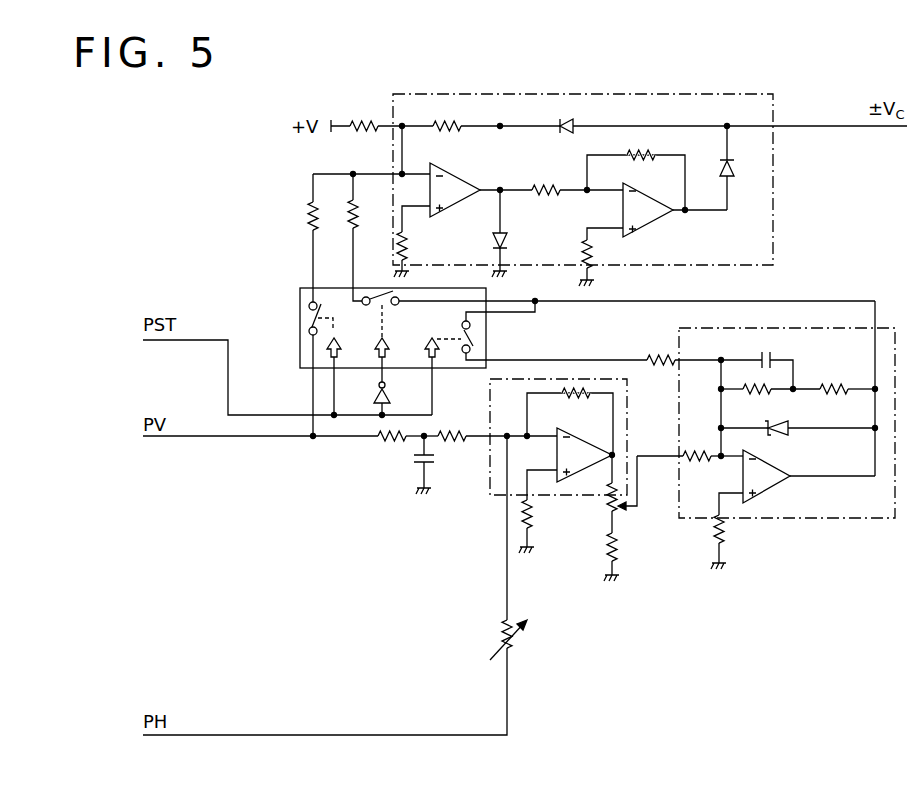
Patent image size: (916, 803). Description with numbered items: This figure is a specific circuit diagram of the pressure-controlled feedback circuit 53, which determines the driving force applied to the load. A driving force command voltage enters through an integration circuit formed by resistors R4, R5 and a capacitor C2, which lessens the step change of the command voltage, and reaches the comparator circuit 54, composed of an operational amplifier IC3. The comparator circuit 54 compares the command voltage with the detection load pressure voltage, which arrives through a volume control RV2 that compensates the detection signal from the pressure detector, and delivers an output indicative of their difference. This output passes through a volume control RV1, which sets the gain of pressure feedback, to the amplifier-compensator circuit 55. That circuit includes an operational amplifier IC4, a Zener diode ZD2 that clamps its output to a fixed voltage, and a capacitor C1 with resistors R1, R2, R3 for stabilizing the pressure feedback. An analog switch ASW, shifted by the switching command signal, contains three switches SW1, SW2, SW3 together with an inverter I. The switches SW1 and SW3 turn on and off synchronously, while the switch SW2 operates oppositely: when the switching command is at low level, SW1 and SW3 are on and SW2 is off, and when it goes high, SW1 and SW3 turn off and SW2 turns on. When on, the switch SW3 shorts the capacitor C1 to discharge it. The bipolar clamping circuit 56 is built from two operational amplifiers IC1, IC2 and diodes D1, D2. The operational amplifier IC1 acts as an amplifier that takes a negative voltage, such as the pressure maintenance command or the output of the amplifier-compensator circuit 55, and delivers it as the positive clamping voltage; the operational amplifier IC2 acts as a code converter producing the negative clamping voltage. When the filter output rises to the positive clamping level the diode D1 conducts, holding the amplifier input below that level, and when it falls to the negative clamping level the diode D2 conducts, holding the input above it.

The pressure-controlled feedback circuit 53 is at (390, 95).
The comparator circuit 54 is at (585, 495).
The amplifier-compensator circuit 55 is at (835, 519).
The bipolar clamping circuit 56 is at (746, 96).
The operational amplifier IC1 is at (456, 197).
The operational amplifier IC2 is at (648, 218).
The operational amplifier IC3 is at (584, 462).
The operational amplifier IC4 is at (766, 482).
The diode D1 is at (551, 117).
The diode D2 is at (742, 168).
The Zener diode ZD2 is at (798, 416).
The analog switch ASW is at (300, 296).
The switch SW1 is at (306, 319).
The switch SW2 is at (397, 293).
The switch SW3 is at (480, 337).
The inverter I is at (372, 398).
The resistor R1 is at (697, 447).
The resistor R2 is at (847, 380).
The resistor R3 is at (770, 380).
The resistor R4 is at (385, 451).
The resistor R5 is at (454, 426).
The capacitor C1 is at (757, 364).
The capacitor C2 is at (437, 465).
The volume control RV1 is at (632, 518).
The volume control RV2 is at (523, 642).